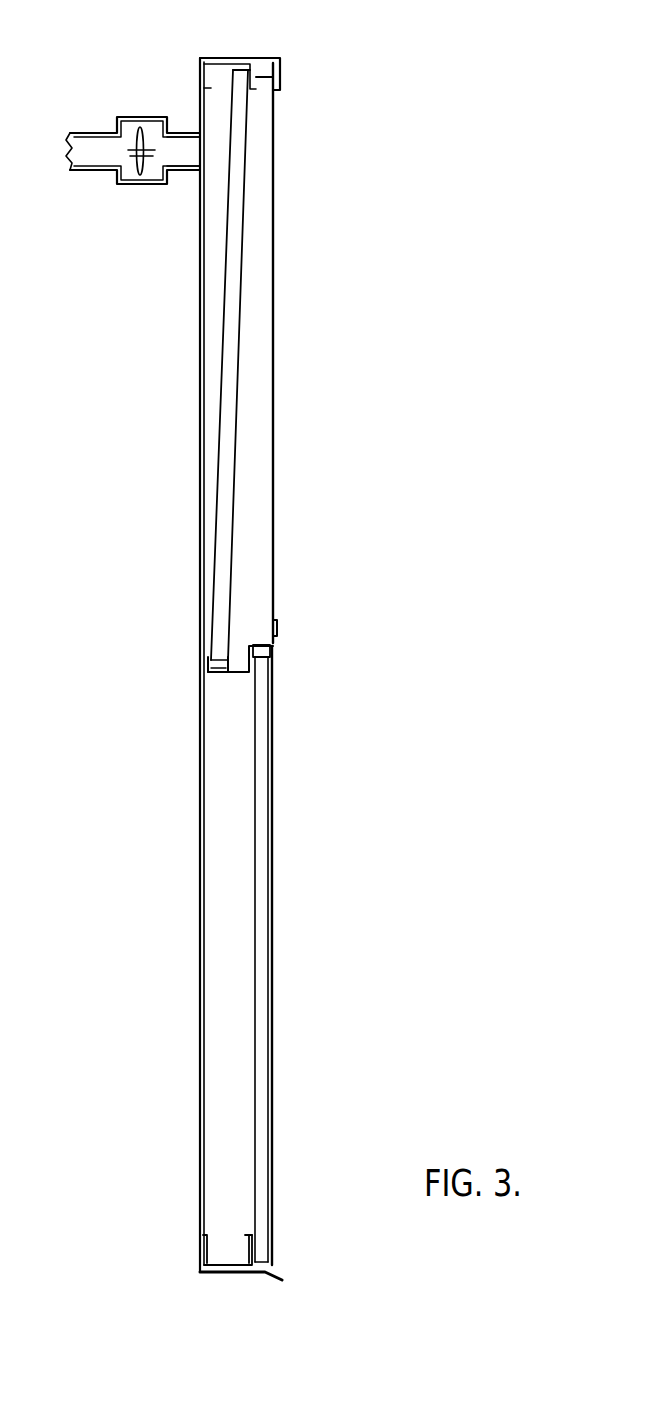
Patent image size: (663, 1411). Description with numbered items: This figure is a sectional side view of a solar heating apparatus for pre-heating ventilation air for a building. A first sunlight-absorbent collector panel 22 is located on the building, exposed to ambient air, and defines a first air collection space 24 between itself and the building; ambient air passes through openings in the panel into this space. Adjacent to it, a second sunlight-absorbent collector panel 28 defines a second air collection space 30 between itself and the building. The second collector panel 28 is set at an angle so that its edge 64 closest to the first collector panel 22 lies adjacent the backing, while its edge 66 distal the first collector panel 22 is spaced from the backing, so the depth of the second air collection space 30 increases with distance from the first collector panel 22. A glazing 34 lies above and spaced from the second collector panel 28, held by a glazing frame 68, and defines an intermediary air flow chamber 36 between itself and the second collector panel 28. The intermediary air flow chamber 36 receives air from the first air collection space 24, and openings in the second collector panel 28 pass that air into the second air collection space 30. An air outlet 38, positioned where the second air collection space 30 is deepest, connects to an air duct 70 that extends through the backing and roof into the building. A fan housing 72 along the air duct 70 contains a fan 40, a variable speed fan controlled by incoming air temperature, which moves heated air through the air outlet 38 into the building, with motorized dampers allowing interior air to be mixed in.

The first sunlight-absorbent collector panel 22 is at (263, 827).
The first air collection space 24 is at (237, 782).
The second sunlight-absorbent collector panel 28 is at (227, 376).
The second air collection space 30 is at (213, 104).
The glazing 34 is at (276, 460).
The intermediary air flow chamber 36 is at (263, 549).
The air outlet 38 is at (197, 151).
The fan 40 is at (135, 170).
The edge of the second collector panel 64 is at (215, 672).
The edge of the second collector panel 66 is at (245, 67).
The glazing frame 68 is at (277, 626).
The air duct 70 is at (180, 158).
The fan housing 72 is at (120, 185).